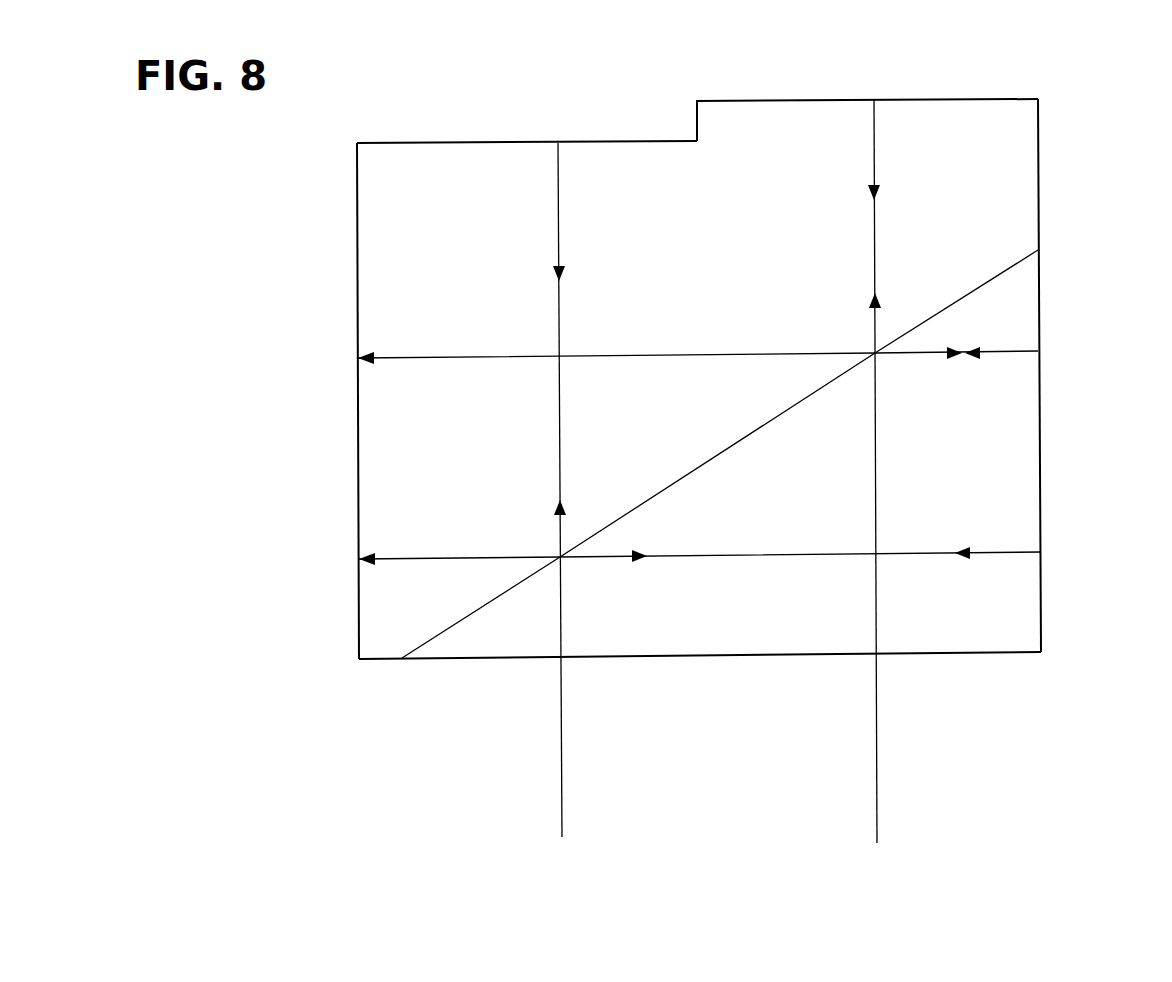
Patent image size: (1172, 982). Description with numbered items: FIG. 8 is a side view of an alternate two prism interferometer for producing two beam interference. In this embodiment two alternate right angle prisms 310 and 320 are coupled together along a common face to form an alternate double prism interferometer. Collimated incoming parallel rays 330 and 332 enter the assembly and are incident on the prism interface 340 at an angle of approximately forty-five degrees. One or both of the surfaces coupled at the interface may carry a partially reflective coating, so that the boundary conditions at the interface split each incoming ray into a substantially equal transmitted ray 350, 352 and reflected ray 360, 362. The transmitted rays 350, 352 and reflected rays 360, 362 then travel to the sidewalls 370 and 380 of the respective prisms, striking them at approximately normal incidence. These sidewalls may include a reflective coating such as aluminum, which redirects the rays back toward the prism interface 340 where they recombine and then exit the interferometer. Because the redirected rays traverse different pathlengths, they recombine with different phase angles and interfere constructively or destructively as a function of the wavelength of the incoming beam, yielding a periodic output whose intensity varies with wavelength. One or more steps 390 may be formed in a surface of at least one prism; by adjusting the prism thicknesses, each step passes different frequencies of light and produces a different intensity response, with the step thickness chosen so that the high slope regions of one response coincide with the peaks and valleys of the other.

The right angle prism 310 is at (910, 641).
The right angle prism 320 is at (358, 452).
The incoming parallel ray 330 is at (567, 813).
The incoming parallel ray 332 is at (880, 812).
The prism interface 340 is at (1010, 268).
The transmitted ray 350 is at (548, 533).
The transmitted ray 352 is at (873, 325).
The reflected ray 360 is at (600, 550).
The reflected ray 362 is at (915, 345).
The sidewall 370 is at (845, 103).
The sidewall 380 is at (1035, 413).
The step 390 is at (497, 150).